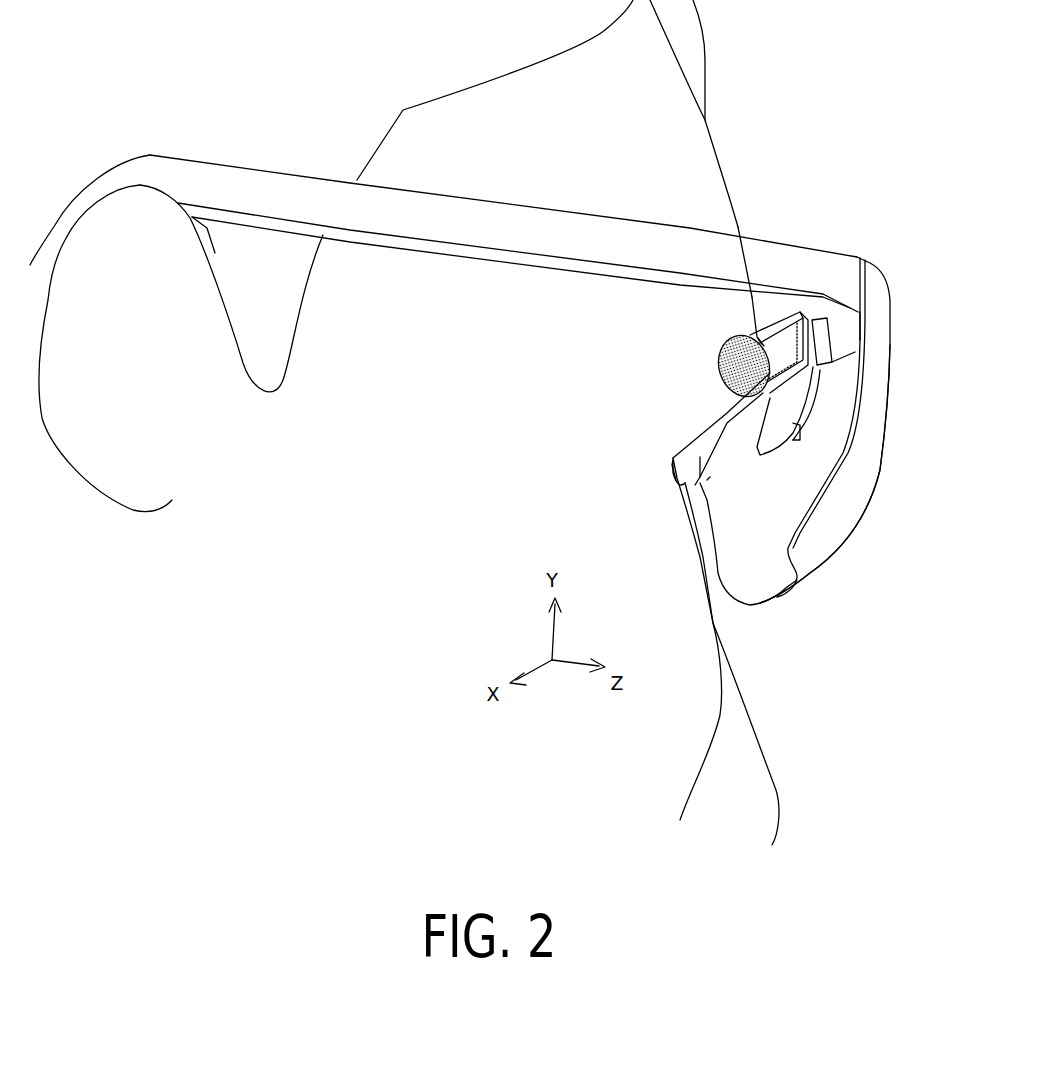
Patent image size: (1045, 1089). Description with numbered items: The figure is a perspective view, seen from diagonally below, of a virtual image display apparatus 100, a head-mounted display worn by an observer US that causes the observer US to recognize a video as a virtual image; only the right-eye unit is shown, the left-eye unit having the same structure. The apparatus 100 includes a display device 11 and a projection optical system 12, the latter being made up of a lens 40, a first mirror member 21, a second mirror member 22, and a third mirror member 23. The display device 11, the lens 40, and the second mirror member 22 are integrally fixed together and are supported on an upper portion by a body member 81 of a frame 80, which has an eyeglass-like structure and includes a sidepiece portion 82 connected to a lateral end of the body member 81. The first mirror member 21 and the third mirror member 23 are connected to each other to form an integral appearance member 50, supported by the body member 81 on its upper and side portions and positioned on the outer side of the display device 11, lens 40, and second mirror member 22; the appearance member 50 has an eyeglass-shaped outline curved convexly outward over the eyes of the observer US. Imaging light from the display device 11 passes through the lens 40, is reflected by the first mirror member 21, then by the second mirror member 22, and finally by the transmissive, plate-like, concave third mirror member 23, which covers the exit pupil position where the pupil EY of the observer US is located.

The virtual image display apparatus 100 is at (838, 222).
The frame 80 is at (698, 218).
The sidepiece portion 82 is at (630, 247).
The body member 81 is at (805, 287).
The lens 40 is at (825, 342).
The display device 11 is at (777, 345).
The projection optical system 12 is at (896, 328).
The first mirror member 21 is at (842, 403).
The second mirror member 22 is at (818, 430).
The third mirror member 23 is at (778, 533).
The appearance member 50 is at (882, 488).
The observer US is at (737, 217).
The pupil EY is at (672, 480).